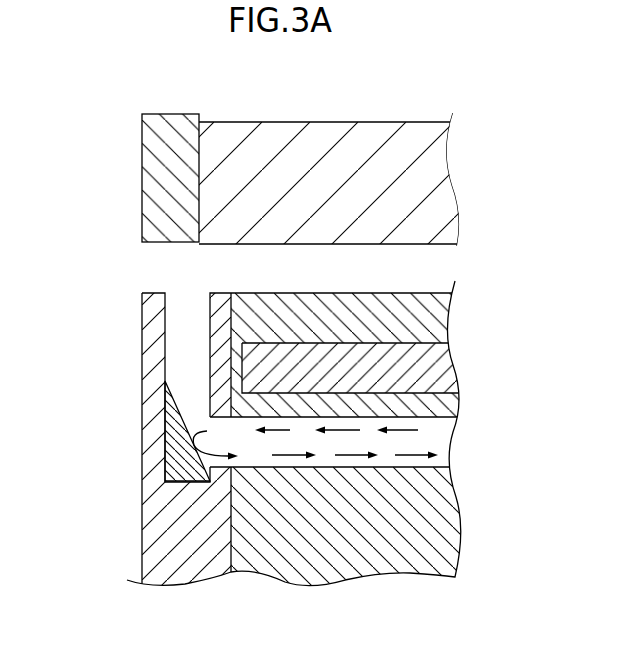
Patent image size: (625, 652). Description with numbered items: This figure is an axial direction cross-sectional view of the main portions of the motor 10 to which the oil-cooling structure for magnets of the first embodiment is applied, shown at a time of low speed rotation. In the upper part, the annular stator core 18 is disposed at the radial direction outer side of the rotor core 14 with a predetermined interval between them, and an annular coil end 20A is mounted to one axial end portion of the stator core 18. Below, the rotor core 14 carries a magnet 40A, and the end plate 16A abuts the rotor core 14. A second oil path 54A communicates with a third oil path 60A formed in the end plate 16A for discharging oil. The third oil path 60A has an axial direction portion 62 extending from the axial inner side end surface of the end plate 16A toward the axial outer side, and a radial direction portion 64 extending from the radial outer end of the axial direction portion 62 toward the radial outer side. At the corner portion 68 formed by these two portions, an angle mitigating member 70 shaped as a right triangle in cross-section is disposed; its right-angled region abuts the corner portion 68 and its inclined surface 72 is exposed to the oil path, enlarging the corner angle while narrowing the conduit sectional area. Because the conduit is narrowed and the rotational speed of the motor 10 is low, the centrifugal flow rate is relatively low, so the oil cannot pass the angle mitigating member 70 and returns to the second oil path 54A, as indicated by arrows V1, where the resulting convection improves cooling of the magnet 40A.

The motor 10 is at (412, 85).
The rotor core 14 is at (417, 281).
The stator core 18 is at (308, 122).
The coil end 20A is at (173, 113).
The magnet 40A is at (330, 343).
The third oil path 60A is at (166, 352).
The radial direction portion 64 is at (166, 313).
The angle mitigating member 70 is at (166, 414).
The corner portion 68 is at (170, 480).
The inclined surface 72 is at (192, 417).
The end plate 16A is at (142, 552).
The axial direction portion 62 is at (208, 458).
The arrows V1 is at (322, 432).
The second oil path 54A is at (417, 461).